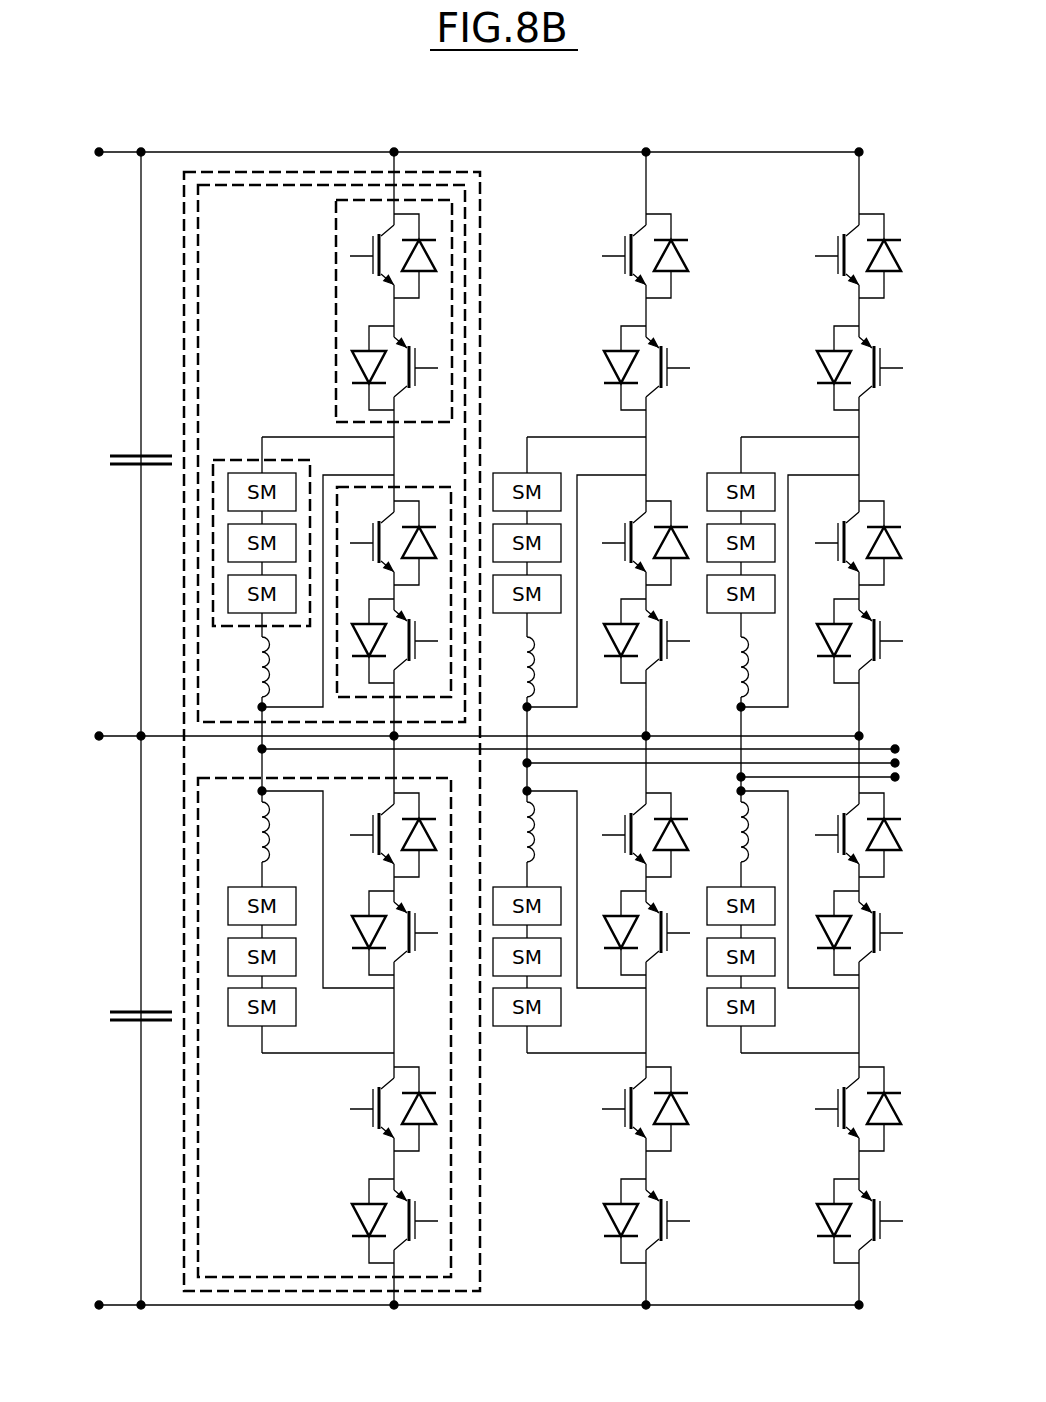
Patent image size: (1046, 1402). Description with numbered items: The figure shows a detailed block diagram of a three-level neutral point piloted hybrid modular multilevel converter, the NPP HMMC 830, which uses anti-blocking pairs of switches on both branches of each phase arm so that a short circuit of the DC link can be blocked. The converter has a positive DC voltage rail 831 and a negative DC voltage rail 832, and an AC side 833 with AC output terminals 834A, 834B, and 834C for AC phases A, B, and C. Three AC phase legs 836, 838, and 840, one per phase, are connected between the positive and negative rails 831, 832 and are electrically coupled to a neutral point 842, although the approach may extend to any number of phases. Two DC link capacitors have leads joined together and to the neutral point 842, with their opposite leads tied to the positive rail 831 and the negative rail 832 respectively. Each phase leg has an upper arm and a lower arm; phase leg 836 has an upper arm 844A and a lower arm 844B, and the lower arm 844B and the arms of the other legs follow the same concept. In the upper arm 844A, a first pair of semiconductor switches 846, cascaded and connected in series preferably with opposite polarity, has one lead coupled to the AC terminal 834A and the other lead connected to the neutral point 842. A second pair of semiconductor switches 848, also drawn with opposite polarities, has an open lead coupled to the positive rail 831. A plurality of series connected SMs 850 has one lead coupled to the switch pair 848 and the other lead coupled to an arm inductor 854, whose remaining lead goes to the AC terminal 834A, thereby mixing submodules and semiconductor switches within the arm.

The NPP HMMC 830 is at (452, 109).
The positive DC voltage rail 831 is at (99, 156).
The negative DC voltage rail 832 is at (99, 1309).
The AC side 833 is at (903, 743).
The AC output terminal 834A is at (232, 756).
The AC output terminal 834B is at (527, 763).
The AC output terminal 834C is at (710, 782).
The AC phase leg 836 is at (270, 765).
The AC phase leg 838 is at (591, 765).
The AC phase leg 840 is at (805, 765).
The neutral point 842 is at (99, 732).
The upper arm 844A is at (262, 453).
The lower arm 844B is at (198, 910).
The first pair of semiconductor switches 846 is at (427, 487).
The second pair of semiconductor switches 848 is at (336, 316).
The series connected SMs 850 is at (238, 460).
The arm inductor 854 is at (245, 667).